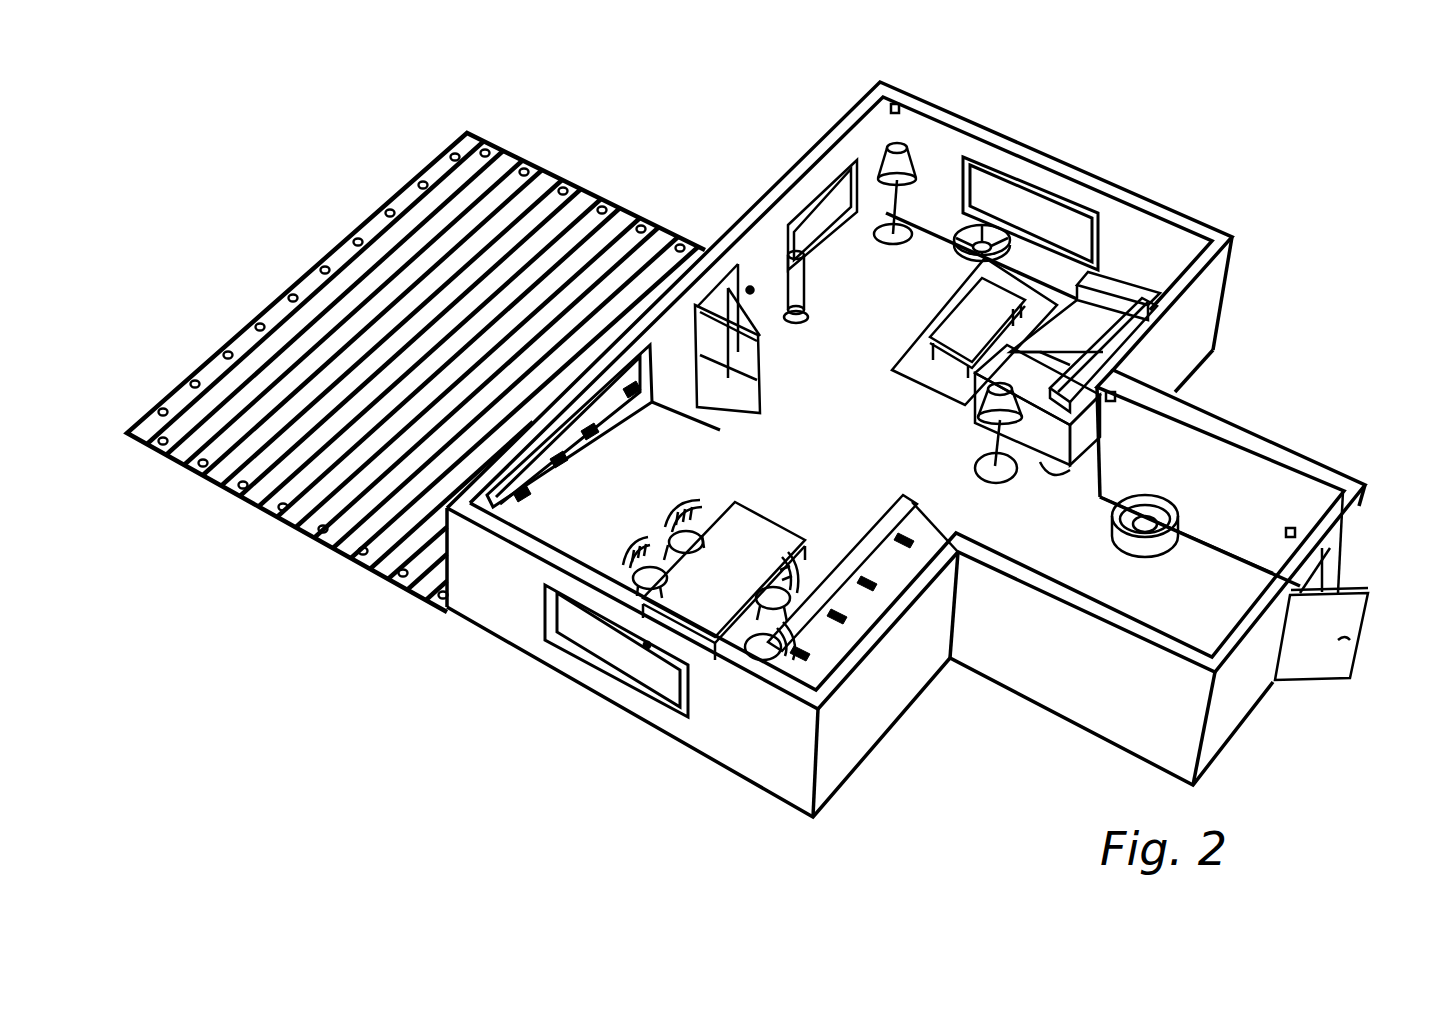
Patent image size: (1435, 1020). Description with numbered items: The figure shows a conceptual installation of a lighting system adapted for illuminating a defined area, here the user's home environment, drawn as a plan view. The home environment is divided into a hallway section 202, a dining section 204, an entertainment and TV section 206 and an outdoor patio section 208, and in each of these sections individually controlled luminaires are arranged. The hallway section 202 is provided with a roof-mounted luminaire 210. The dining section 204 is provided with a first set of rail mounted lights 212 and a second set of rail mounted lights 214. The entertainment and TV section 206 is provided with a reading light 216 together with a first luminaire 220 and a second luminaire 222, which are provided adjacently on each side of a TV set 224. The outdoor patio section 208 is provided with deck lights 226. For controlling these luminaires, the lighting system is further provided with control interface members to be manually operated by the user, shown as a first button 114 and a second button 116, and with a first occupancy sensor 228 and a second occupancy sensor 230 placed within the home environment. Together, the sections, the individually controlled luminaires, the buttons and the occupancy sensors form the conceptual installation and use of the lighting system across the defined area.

The first button 114 is at (1296, 528).
The second button 116 is at (749, 286).
The hallway section 202 is at (1202, 609).
The dining section 204 is at (848, 505).
The entertainment and TV section 206 is at (943, 295).
The outdoor patio section 208 is at (318, 405).
The roof-mounted luminaire 210 is at (1177, 507).
The first set of rail mounted lights 212 is at (523, 474).
The second set of rail mounted lights 214 is at (773, 645).
The reading light 216 is at (975, 462).
The first luminaire 220 is at (797, 328).
The second luminaire 222 is at (905, 222).
The TV set 224 is at (822, 226).
The deck lights 226 is at (163, 407).
The first occupancy sensor 228 is at (1114, 393).
The second occupancy sensor 230 is at (894, 103).